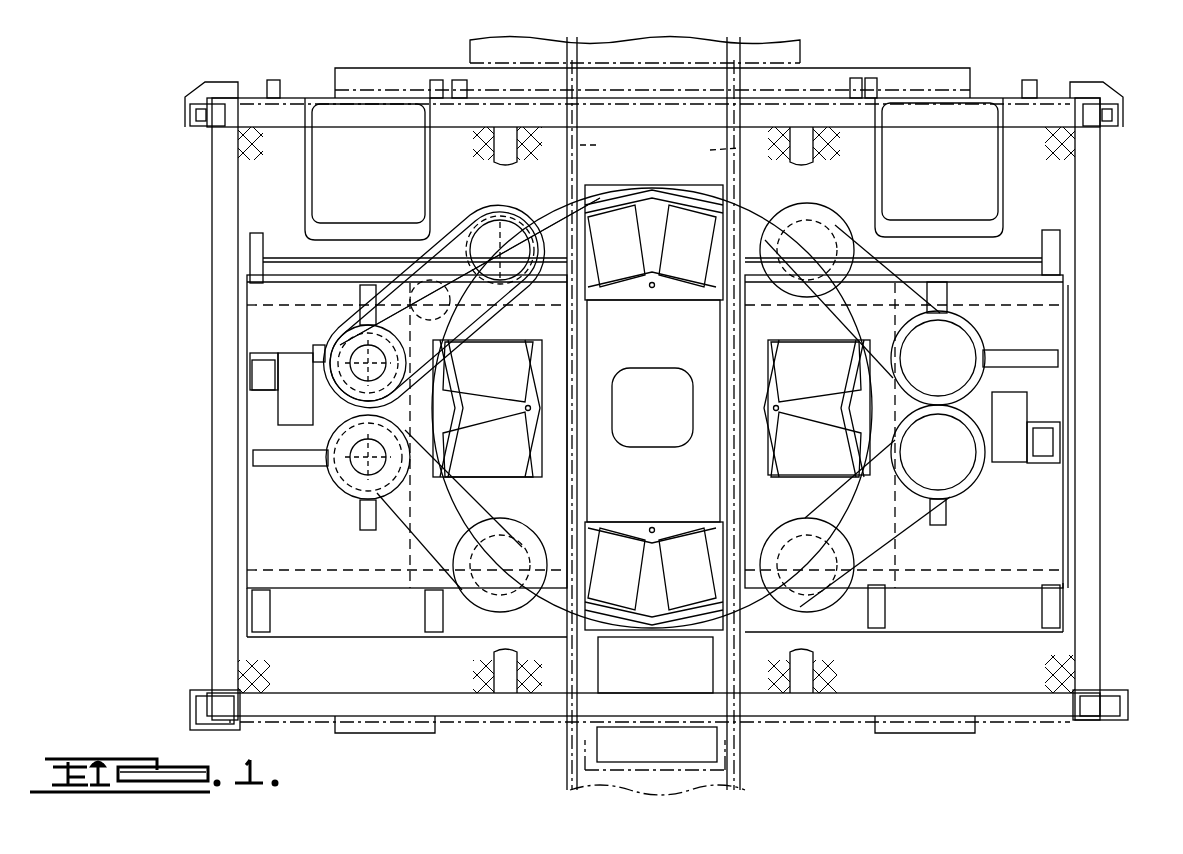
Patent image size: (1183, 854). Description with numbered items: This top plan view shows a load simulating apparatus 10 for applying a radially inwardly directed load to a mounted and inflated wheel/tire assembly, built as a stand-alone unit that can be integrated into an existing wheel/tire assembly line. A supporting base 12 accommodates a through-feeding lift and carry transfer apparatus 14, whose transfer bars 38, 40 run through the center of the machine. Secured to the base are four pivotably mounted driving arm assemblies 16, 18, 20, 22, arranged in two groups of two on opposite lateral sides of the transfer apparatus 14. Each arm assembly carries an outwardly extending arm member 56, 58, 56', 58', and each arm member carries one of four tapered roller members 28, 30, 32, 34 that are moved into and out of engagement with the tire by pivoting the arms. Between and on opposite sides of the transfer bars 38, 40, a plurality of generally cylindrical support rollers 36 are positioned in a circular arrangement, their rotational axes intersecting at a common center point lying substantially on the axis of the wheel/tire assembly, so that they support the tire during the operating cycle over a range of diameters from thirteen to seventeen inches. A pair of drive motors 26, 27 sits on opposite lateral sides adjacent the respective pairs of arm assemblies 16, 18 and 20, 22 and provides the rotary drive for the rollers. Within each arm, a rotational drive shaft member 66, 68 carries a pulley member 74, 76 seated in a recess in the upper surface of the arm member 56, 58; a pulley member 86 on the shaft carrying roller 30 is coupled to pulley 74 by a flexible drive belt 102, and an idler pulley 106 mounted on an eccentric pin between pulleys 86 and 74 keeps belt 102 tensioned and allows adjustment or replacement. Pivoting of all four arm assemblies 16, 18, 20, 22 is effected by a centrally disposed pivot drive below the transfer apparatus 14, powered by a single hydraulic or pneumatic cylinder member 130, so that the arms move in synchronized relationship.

The load simulating apparatus 10 is at (1133, 530).
The supporting base 12 is at (972, 633).
The lift and carry transfer apparatus 14 is at (750, 752).
The driving arm assembly 16 is at (447, 525).
The driving arm assembly 18 is at (470, 330).
The driving arm assembly 20 is at (884, 327).
The driving arm assembly 22 is at (879, 519).
The drive motor 26 is at (382, 182).
The drive motor 27 is at (955, 182).
The roller member 28 is at (472, 608).
The roller member 30 is at (532, 215).
The roller member 32 is at (836, 212).
The roller member 34 is at (838, 608).
The support rollers 36 is at (676, 272).
The transfer bar 38 is at (715, 150).
The transfer bar 40 is at (604, 146).
The arm member 56 is at (423, 419).
The arm member 56' is at (911, 315).
The arm member 58 is at (459, 377).
The arm member 58' is at (930, 499).
The rotational drive shaft member 66 is at (340, 343).
The rotational drive shaft member 68 is at (345, 485).
The pulley member 74 is at (318, 386).
The pulley member 76 is at (328, 440).
The pulley member 86 is at (500, 222).
The flexible drive belt 102 is at (432, 262).
The idler pulley 106 is at (360, 312).
The cylinder member 130 is at (665, 679).